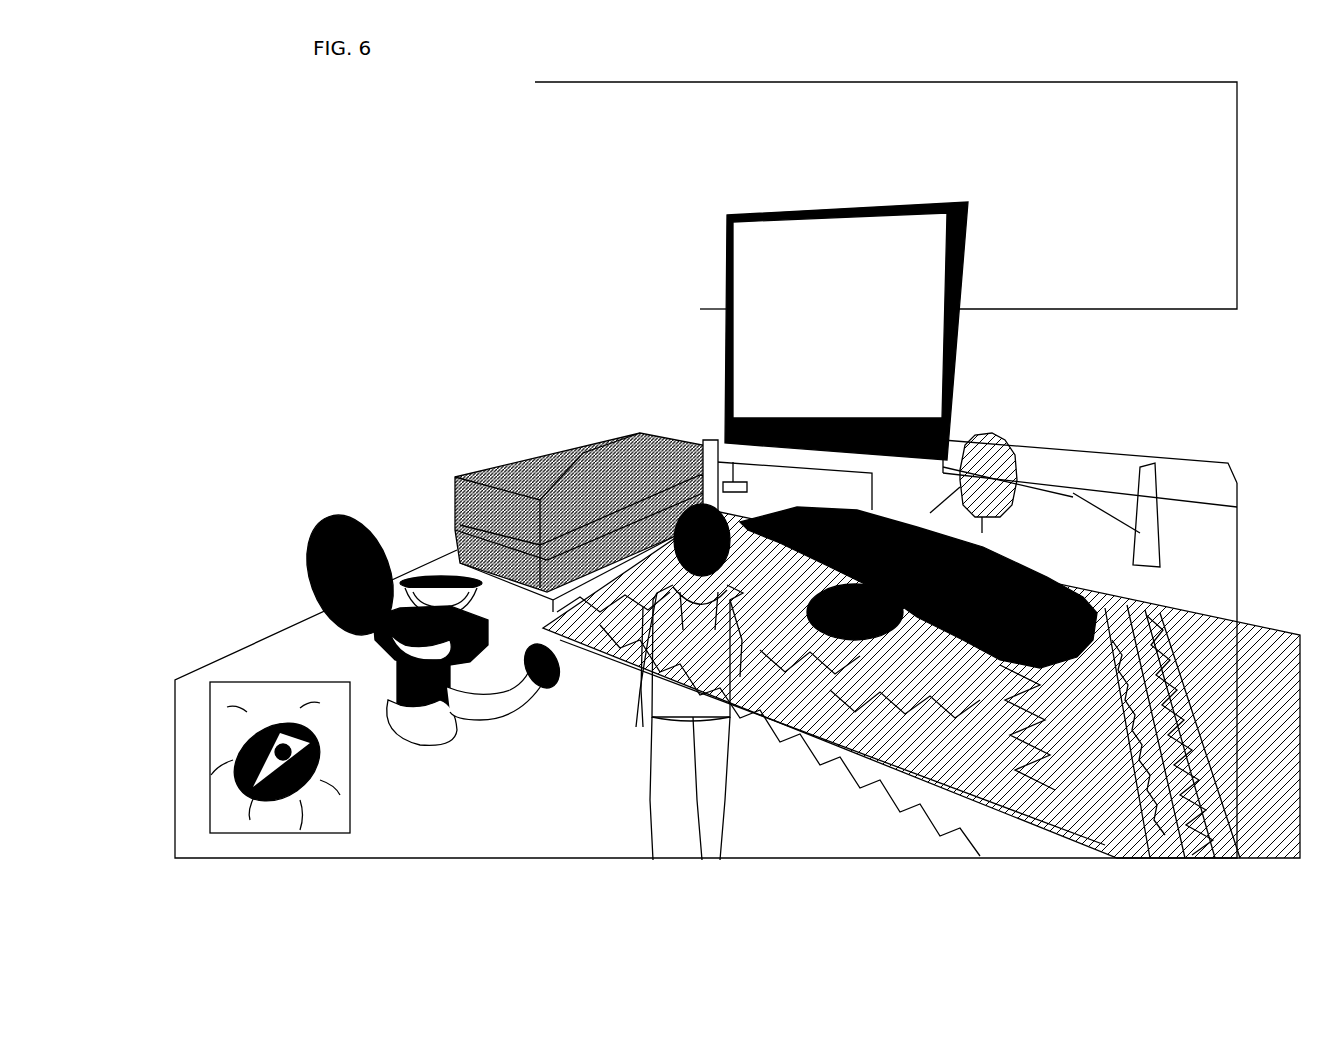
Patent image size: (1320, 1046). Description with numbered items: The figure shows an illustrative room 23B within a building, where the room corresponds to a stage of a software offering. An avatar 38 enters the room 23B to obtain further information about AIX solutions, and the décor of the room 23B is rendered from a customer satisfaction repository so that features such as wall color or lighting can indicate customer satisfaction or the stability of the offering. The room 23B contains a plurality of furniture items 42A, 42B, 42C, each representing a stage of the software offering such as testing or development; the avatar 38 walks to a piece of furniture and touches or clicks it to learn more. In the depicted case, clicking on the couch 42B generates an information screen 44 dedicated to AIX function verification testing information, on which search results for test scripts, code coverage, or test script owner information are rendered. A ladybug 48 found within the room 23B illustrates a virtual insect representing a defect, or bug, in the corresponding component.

The room 23B is at (264, 266).
The information screen 44 is at (872, 195).
The furniture item 42C is at (998, 425).
The couch 42B is at (527, 452).
The furniture item 42A is at (308, 507).
The ladybug 48 is at (350, 790).
The avatar 38 is at (735, 757).